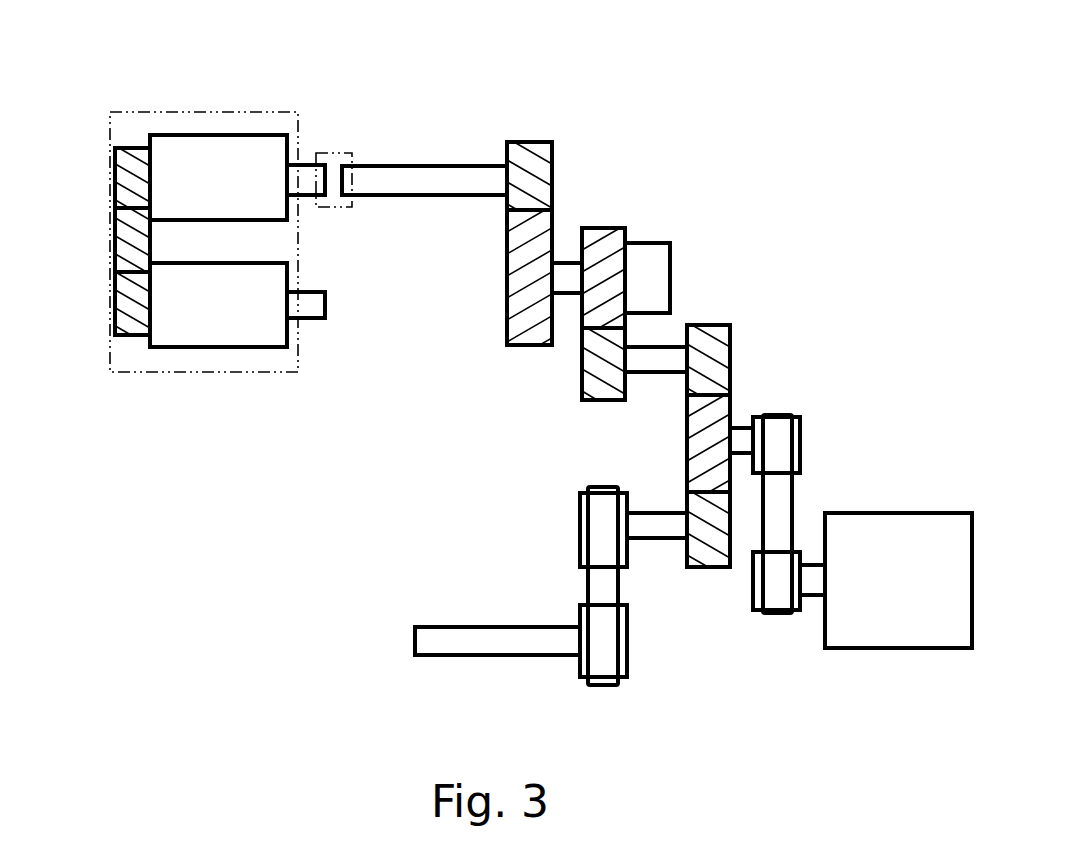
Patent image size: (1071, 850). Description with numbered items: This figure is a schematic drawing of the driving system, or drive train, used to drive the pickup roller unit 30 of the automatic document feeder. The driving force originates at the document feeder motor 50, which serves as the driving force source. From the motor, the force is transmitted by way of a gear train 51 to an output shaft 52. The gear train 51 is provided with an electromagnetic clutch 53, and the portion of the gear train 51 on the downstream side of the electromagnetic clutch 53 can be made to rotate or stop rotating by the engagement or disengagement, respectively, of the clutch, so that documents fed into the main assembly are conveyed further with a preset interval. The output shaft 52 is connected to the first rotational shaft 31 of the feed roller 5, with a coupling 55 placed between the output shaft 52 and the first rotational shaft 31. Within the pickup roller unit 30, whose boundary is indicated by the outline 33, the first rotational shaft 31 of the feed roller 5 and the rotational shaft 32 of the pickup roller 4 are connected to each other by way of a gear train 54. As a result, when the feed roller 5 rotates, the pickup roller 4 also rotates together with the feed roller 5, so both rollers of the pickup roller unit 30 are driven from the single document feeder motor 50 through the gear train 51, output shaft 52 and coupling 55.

The pickup roller 4 is at (197, 340).
The feed roller 5 is at (220, 143).
The pickup roller unit 30 is at (272, 66).
The first rotational shaft 31 is at (308, 165).
The rotational shaft 32 is at (318, 320).
The housing (unit boundary) 33 is at (272, 372).
The document feeder motor 50 is at (900, 523).
The gear train 51 is at (585, 389).
The output shaft 52 is at (398, 166).
The electromagnetic clutch 53 is at (665, 264).
The gear train 54 is at (90, 163).
The coupling 55 is at (352, 207).